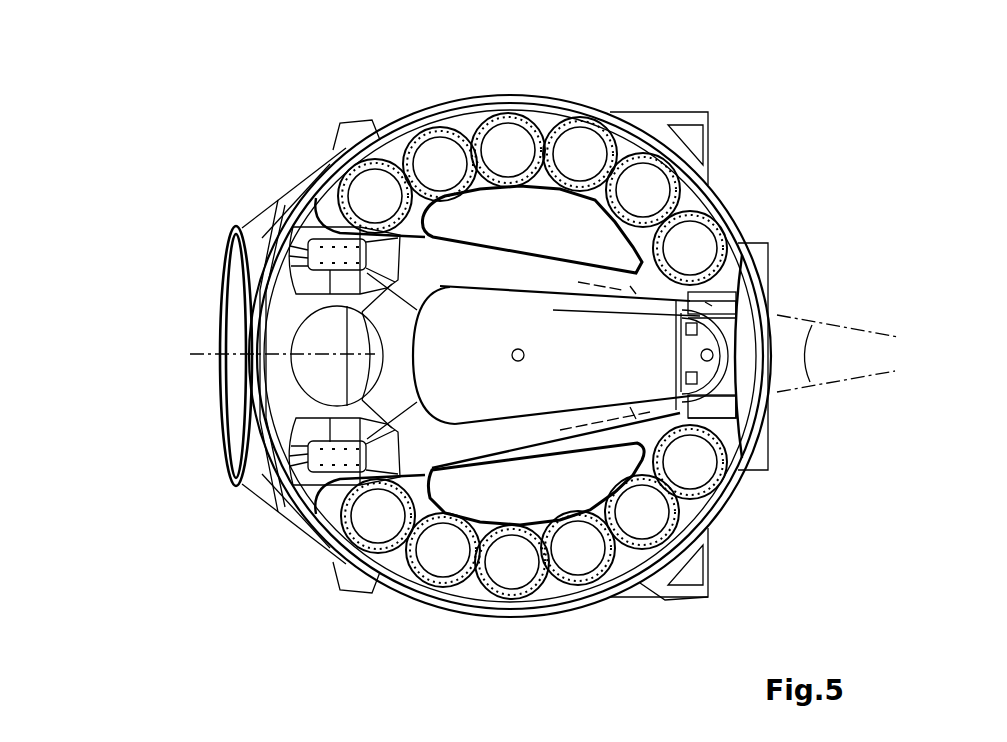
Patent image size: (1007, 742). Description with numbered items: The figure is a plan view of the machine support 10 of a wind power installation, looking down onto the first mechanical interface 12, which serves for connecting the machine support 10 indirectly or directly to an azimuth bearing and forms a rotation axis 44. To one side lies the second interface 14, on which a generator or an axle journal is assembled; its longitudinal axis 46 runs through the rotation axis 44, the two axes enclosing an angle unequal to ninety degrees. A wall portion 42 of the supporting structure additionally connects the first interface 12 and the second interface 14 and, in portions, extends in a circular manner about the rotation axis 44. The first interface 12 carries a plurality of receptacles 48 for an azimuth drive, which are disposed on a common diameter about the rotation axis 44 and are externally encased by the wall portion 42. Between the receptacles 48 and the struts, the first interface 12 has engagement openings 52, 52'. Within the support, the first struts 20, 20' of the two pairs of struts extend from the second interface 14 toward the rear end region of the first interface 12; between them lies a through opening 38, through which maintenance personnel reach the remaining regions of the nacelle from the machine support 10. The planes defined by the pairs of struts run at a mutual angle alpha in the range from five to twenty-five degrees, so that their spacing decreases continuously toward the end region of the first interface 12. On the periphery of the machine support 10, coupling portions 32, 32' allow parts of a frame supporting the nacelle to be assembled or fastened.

The machine support 10 is at (224, 143).
The first mechanical interface 12 is at (567, 104).
The second interface 14 is at (220, 236).
The first strut 20 is at (584, 417).
The first strut 20' is at (635, 307).
The coupling portion 32 is at (674, 618).
The coupling portion 32' is at (326, 401).
The through opening 38 is at (460, 306).
The wall portion 42 is at (275, 205).
The rotation axis 44 is at (523, 358).
The longitudinal axis 46 is at (205, 352).
The receptacle 48 is at (494, 128).
The engagement opening 52 is at (527, 569).
The engagement opening 52' is at (559, 159).
The angle alpha is at (805, 355).